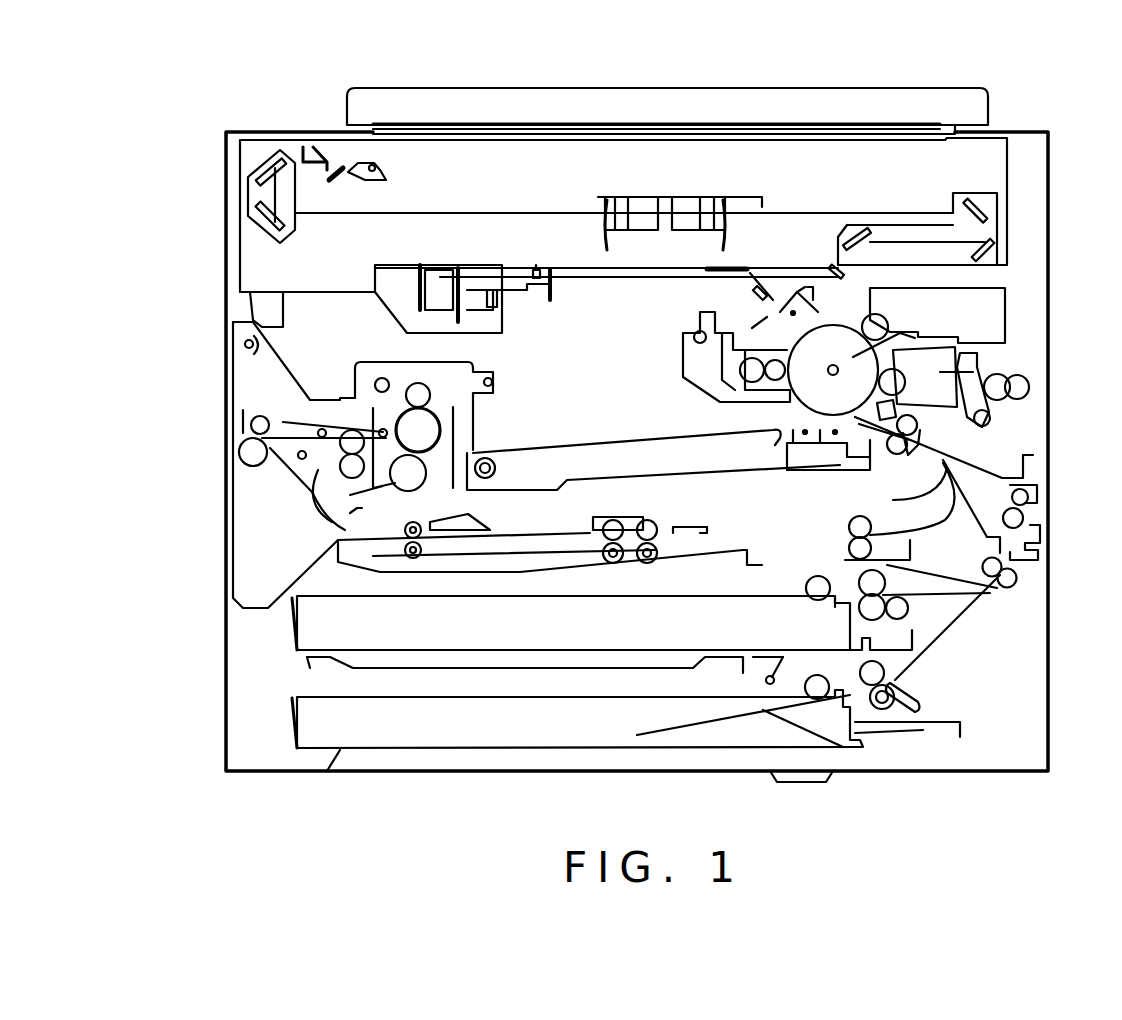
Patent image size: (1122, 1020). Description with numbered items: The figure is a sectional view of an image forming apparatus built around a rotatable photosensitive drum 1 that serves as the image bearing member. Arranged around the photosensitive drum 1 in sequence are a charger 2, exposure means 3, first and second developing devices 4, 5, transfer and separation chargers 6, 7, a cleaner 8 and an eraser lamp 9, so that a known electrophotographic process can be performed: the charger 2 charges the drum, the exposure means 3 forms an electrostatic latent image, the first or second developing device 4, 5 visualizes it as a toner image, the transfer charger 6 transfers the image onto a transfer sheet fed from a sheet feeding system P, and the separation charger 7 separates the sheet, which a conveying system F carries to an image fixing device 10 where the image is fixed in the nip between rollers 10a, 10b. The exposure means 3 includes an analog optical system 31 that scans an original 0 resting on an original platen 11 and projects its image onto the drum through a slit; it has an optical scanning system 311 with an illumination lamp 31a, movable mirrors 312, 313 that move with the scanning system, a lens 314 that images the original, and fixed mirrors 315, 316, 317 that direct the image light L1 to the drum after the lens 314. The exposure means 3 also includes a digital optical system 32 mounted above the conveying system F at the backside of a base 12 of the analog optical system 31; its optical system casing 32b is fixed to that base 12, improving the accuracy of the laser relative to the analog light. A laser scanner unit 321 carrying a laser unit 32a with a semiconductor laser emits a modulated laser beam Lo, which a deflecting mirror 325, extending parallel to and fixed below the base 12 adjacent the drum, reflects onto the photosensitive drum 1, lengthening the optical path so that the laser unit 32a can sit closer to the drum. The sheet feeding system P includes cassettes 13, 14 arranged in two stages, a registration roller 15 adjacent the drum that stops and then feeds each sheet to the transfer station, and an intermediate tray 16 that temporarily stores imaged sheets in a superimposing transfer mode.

The original 0 is at (537, 134).
The original platen 11 is at (726, 140).
The exposure means 3 is at (250, 207).
The analog optical system 31 is at (255, 164).
The optical scanning system 311 is at (312, 150).
The movable mirror 312 is at (272, 165).
The movable mirror 313 is at (262, 232).
The illumination lamp 31a is at (388, 170).
The image light L1 is at (491, 213).
The lens 314 is at (643, 197).
The deflecting mirror 325 is at (836, 266).
The fixed mirror 317 is at (845, 318).
The fixed mirror 315 is at (985, 214).
The fixed mirror 316 is at (985, 254).
The base 12 is at (566, 266).
The laser beam Lo is at (604, 279).
The digital optical system 32 is at (431, 294).
The laser unit 32a is at (447, 270).
The optical system casing 32b is at (417, 282).
The laser scanner unit 321 is at (510, 314).
The image fixing device 10 is at (425, 436).
The roller 10a is at (443, 432).
The roller 10b is at (425, 482).
The conveying system F is at (621, 443).
The intermediate tray 16 is at (565, 548).
The photosensitive drum 1 is at (865, 352).
The cleaner 8 is at (768, 383).
The eraser lamp 9 is at (771, 291).
The charger 2 is at (794, 298).
The separation charger 7 is at (797, 466).
The transfer charger 6 is at (835, 470).
The first developing device 4 is at (990, 307).
The second developing device 5 is at (958, 362).
The registration roller 15 is at (935, 506).
The sheet feeding system P is at (963, 642).
The cassette 13 is at (597, 640).
The cassette 14 is at (450, 742).